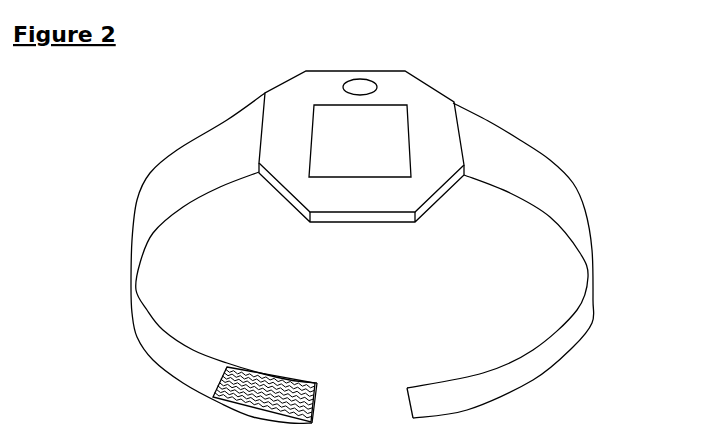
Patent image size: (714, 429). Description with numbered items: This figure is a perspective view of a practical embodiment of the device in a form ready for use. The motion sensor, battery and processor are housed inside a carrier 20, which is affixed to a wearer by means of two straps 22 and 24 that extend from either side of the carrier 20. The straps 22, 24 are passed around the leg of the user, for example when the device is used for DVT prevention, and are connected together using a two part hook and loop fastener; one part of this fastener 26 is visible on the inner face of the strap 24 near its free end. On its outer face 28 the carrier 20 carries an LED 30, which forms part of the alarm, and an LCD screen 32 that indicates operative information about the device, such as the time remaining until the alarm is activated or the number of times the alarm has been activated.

The carrier 20 is at (362, 229).
The strap 22 is at (559, 215).
The strap 24 is at (218, 173).
The hook and loop fastener part 26 is at (287, 400).
The outer face 28 is at (344, 197).
The LED 30 is at (363, 92).
The LCD screen 32 is at (344, 147).